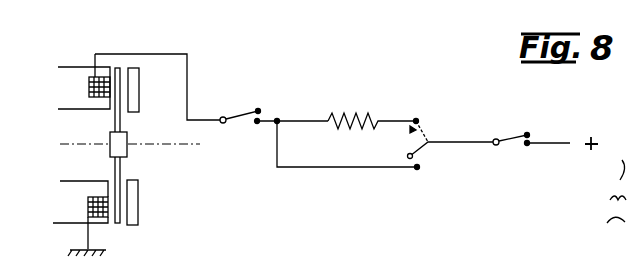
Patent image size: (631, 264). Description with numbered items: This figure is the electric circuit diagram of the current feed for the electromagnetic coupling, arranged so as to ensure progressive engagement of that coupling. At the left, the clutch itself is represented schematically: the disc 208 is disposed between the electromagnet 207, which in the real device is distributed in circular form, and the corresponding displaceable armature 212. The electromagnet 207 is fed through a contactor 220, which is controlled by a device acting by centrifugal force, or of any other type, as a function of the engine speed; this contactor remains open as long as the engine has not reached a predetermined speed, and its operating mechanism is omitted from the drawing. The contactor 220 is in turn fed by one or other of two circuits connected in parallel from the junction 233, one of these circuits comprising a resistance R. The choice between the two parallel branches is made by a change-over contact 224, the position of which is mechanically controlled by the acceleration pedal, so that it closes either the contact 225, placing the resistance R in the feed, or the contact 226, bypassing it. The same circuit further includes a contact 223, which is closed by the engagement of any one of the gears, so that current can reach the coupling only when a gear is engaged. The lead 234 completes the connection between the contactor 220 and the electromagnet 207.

The connecting lead 234 is at (187, 78).
The contactor 220 is at (250, 112).
The junction lead 233 is at (256, 126).
The resistance R is at (355, 113).
The contact 225 is at (416, 118).
The contact 226 is at (415, 169).
The change-over contact 224 is at (430, 144).
The contact 223 is at (525, 134).
The disc 208 is at (122, 173).
The electromagnet 207 is at (88, 204).
The armature 212 is at (138, 210).